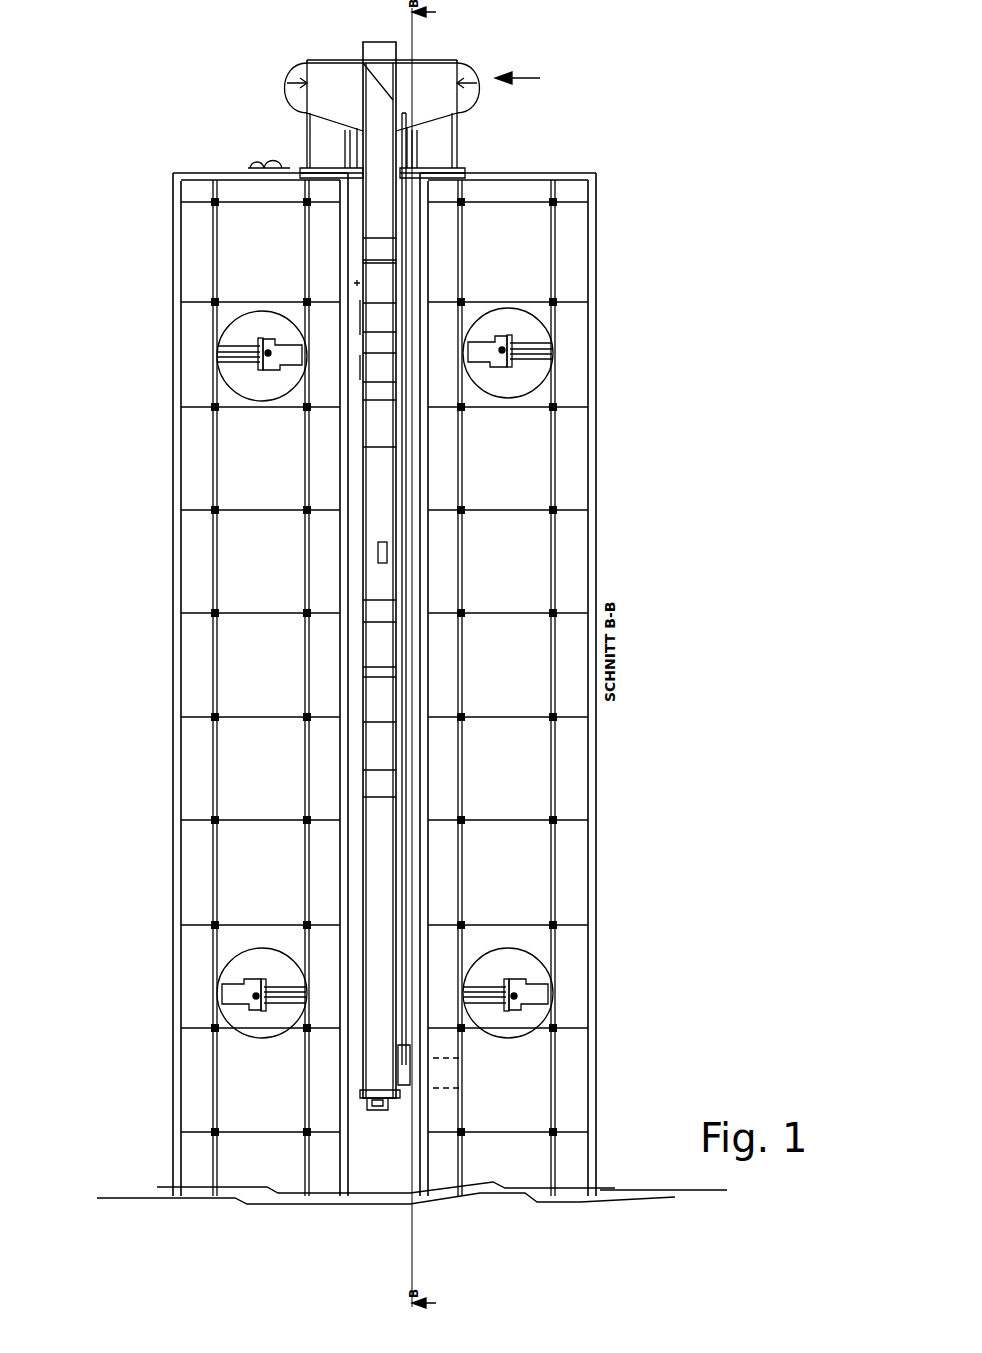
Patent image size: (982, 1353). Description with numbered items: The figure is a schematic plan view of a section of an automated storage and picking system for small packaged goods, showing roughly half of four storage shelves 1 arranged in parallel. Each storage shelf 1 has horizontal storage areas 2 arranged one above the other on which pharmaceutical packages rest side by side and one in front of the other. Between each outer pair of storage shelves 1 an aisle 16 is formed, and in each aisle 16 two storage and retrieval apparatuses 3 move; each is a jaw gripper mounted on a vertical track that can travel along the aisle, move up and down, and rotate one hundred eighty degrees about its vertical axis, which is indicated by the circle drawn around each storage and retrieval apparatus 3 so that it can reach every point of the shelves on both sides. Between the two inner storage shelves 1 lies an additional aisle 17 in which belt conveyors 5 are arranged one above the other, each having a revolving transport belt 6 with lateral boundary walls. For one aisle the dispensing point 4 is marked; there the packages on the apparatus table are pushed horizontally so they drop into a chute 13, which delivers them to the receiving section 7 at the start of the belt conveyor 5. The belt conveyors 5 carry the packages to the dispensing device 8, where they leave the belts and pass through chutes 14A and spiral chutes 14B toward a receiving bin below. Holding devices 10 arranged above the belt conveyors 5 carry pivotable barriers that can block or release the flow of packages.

The storage shelf 1 is at (323, 230).
The horizontal storage area 2 is at (303, 240).
The storage and retrieval apparatus 3 is at (237, 365).
The dispensing point 4 is at (452, 1072).
The belt conveyor 5 is at (383, 1102).
The transport belt 6 is at (385, 500).
The receiving section 7 is at (383, 1072).
The dispensing device 8 is at (529, 76).
The holding device 10 is at (385, 320).
The chute 13 is at (415, 1080).
The chute 14A is at (345, 80).
The spiral chute 14B is at (298, 78).
The aisle 16 is at (245, 540).
The additional aisle 17 is at (355, 580).